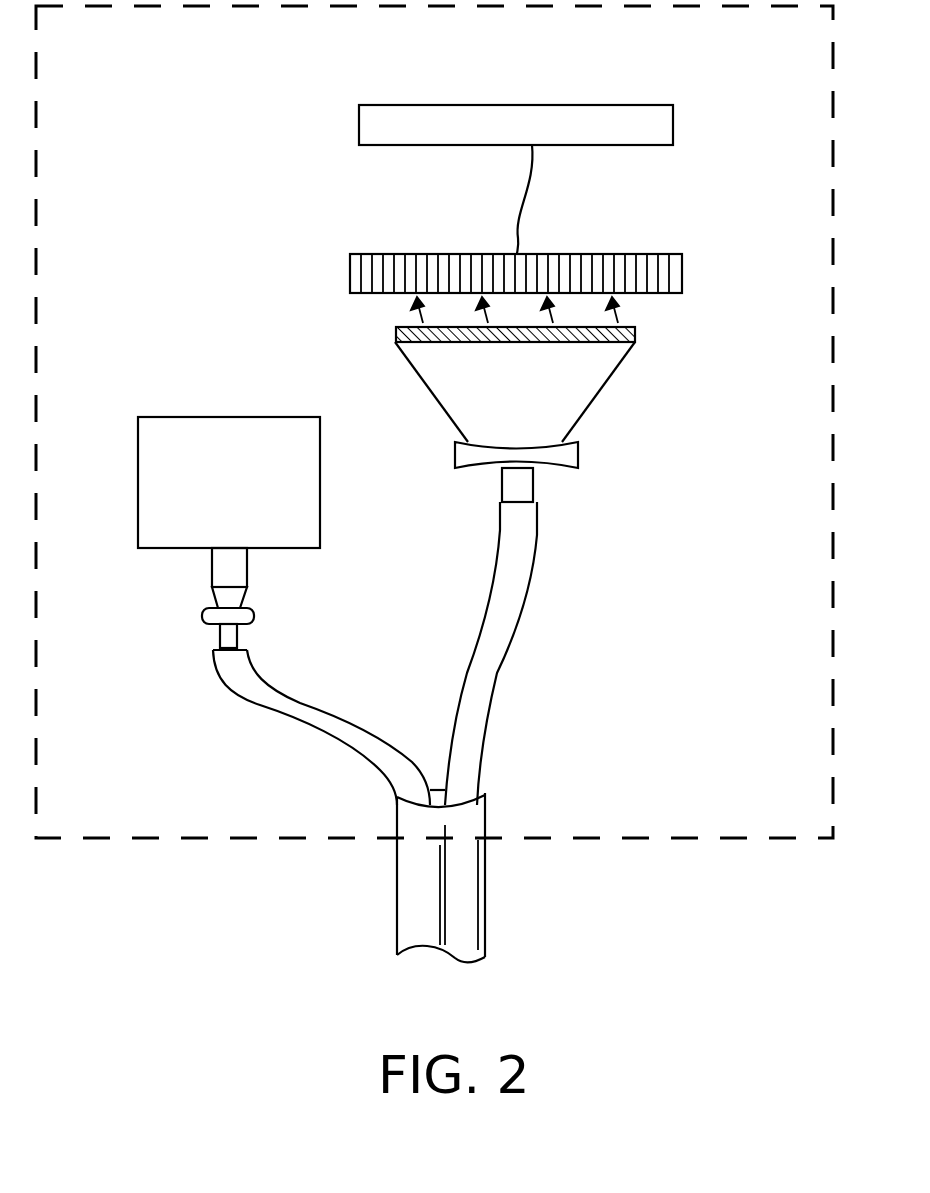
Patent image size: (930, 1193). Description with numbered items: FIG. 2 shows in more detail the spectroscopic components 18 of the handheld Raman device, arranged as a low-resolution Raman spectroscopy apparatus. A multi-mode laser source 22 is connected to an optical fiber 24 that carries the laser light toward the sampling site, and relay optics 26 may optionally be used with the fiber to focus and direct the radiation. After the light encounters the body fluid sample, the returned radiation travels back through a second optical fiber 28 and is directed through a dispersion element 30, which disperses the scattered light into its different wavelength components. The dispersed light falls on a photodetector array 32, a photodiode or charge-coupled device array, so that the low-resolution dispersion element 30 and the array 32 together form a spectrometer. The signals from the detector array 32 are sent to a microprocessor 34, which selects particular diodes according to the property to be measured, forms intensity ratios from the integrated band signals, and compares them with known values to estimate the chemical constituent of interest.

The spectroscopic components 18 is at (143, 838).
The multi-mode laser source 22 is at (229, 512).
The optical fiber 24 is at (317, 708).
The relay optics 26 is at (202, 616).
The second optical fiber 28 is at (503, 648).
The dispersion element 30 is at (635, 330).
The photodetector array 32 is at (682, 270).
The microprocessor 34 is at (673, 122).